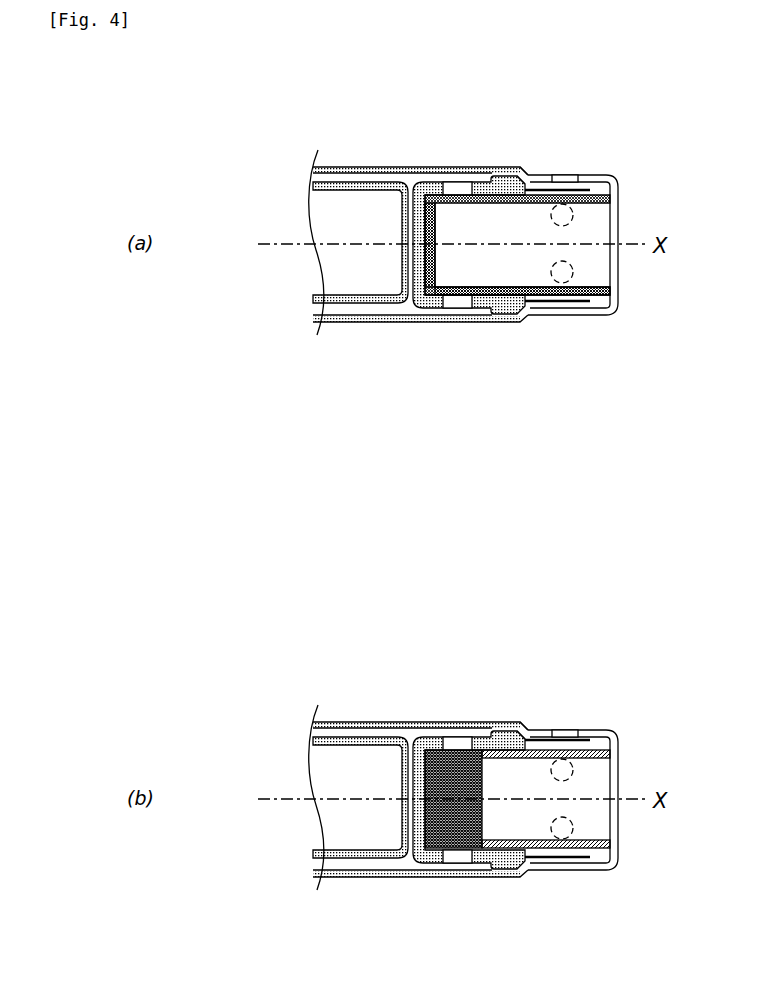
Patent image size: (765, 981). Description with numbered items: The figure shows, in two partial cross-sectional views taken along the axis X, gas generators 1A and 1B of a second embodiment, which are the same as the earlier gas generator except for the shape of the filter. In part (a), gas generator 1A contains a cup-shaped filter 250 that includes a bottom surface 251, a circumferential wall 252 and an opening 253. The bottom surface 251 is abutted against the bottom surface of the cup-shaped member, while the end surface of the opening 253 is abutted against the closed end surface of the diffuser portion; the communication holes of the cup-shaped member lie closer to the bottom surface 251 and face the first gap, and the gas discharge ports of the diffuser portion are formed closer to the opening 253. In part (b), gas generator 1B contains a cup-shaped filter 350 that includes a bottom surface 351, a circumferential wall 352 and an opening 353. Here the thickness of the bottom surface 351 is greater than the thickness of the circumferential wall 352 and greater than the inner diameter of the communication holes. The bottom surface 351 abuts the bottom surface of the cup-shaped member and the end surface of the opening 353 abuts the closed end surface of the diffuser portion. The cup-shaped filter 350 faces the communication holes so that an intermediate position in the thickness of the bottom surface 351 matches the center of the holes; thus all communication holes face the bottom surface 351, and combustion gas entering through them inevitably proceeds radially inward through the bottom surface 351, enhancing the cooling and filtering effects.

The gas generator 1A is at (421, 162).
The gas generator 1B is at (429, 682).
The cup-shaped filter 250 is at (476, 204).
The bottom surface 251 is at (437, 256).
The circumferential wall 252 is at (522, 273).
The opening 253 is at (612, 268).
The cup-shaped filter 350 is at (546, 776).
The bottom surface 351 is at (483, 799).
The circumferential wall 352 is at (546, 823).
The opening 353 is at (652, 785).